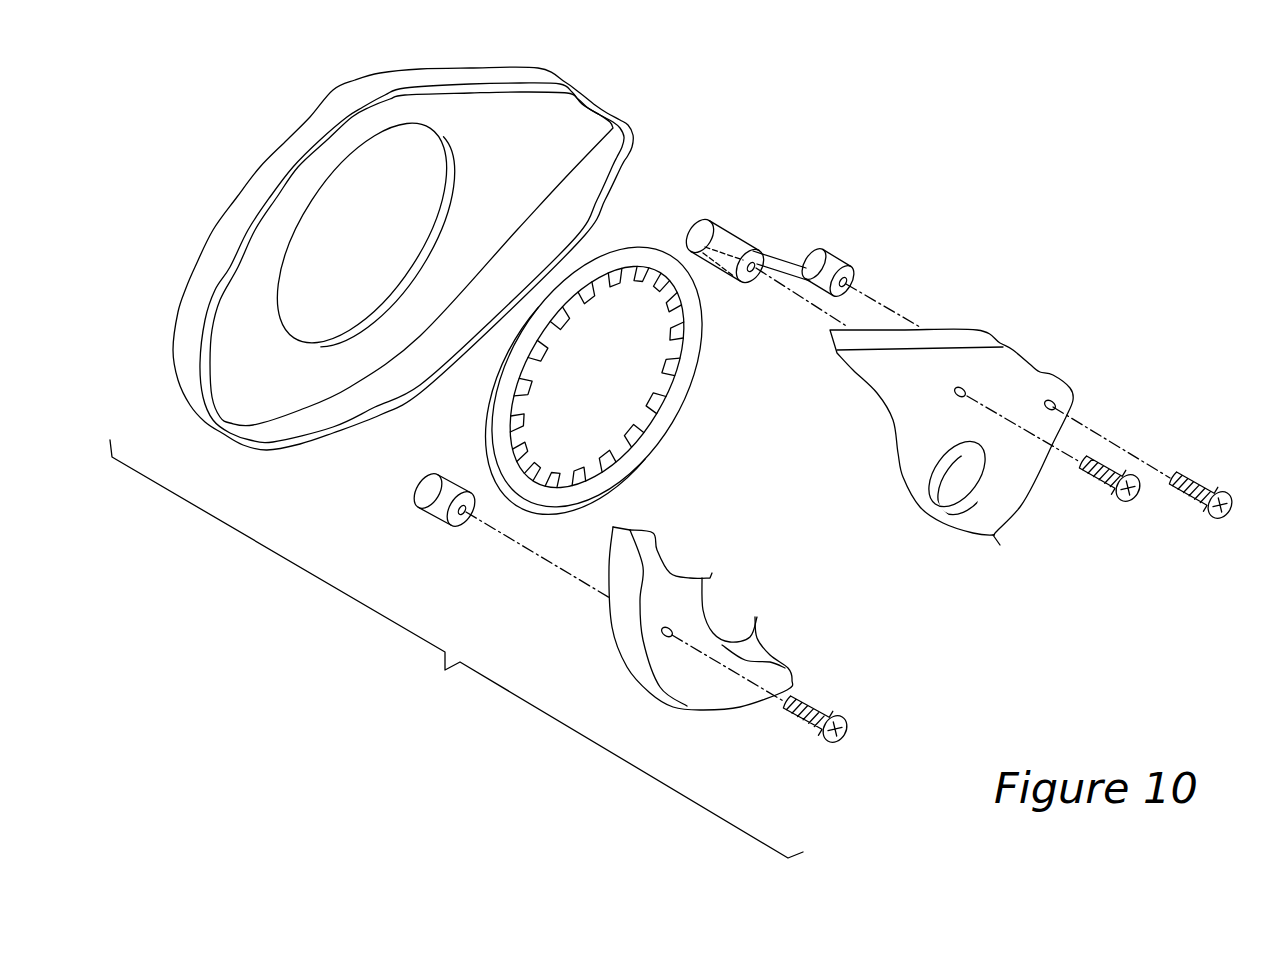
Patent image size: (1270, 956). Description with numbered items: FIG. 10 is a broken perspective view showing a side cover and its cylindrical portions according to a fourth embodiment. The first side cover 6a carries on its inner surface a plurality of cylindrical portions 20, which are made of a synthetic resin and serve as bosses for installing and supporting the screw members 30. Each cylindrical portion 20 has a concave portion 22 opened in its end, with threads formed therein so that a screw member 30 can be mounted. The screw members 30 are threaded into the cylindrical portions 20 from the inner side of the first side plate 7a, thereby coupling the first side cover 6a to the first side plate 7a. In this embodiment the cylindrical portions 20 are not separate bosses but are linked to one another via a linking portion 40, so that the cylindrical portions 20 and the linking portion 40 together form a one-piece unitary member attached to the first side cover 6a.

The first side cover 6a is at (625, 122).
The first side plate 7a is at (1040, 373).
The cylindrical portion 20 is at (730, 248).
The concave portion 22 is at (747, 284).
The screw member 30 is at (1126, 505).
The linking portion 40 is at (776, 255).